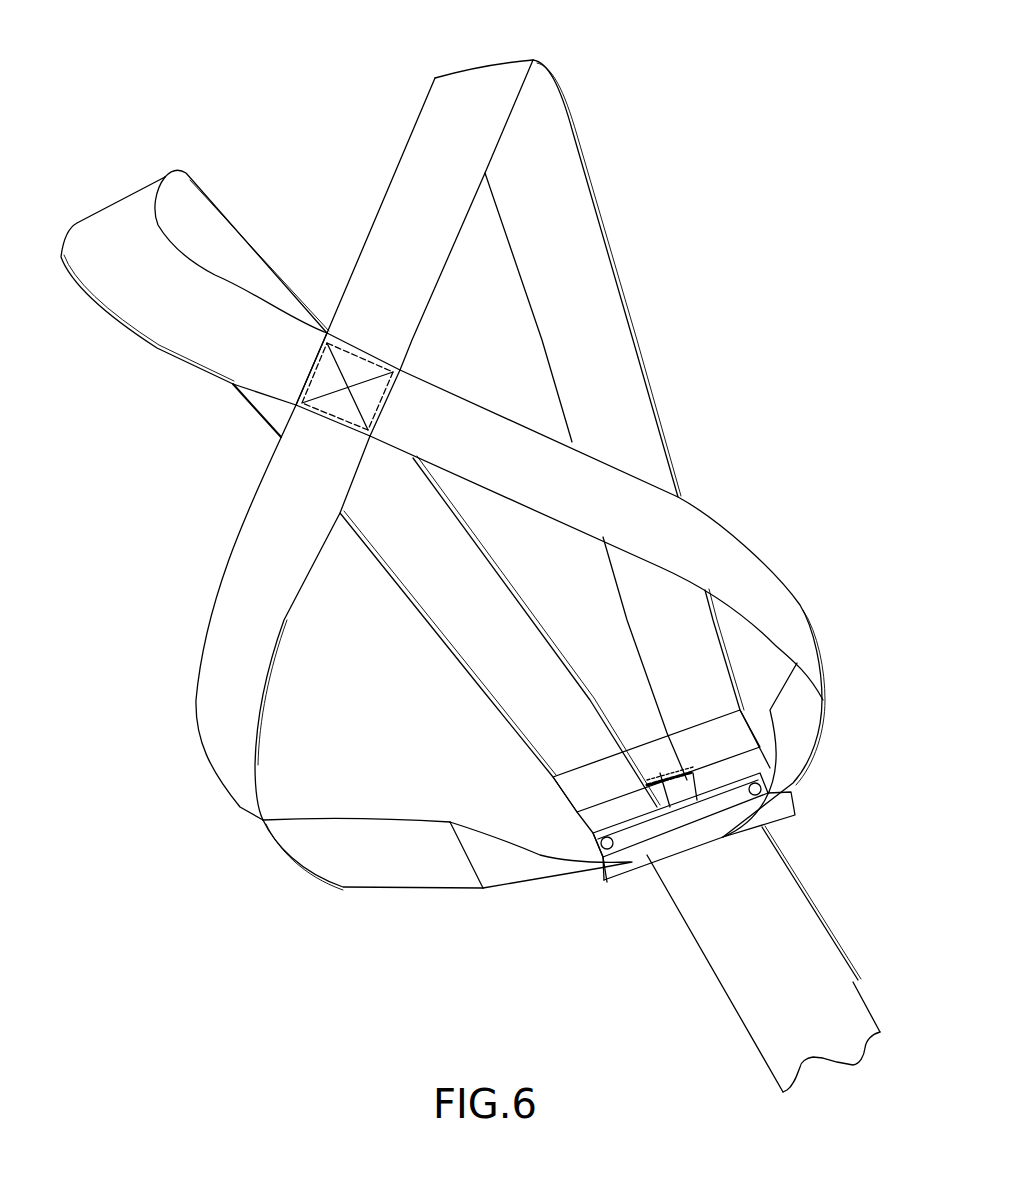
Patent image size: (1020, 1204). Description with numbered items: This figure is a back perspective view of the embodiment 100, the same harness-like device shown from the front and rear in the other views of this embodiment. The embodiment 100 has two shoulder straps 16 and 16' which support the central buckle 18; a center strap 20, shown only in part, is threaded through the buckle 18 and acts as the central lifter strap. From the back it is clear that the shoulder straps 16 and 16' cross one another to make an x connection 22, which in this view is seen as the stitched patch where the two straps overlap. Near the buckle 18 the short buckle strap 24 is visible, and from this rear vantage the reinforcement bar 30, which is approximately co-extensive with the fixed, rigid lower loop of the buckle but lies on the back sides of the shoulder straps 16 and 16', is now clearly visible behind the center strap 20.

The embodiment 100 is at (673, 118).
The shoulder strap 16 is at (483, 511).
The shoulder strap 16' is at (443, 475).
The central buckle 18 is at (540, 798).
The center strap 20 is at (733, 897).
The x connection 22 is at (337, 405).
The short buckle strap 24 is at (663, 790).
The reinforcement bar 30 is at (653, 827).